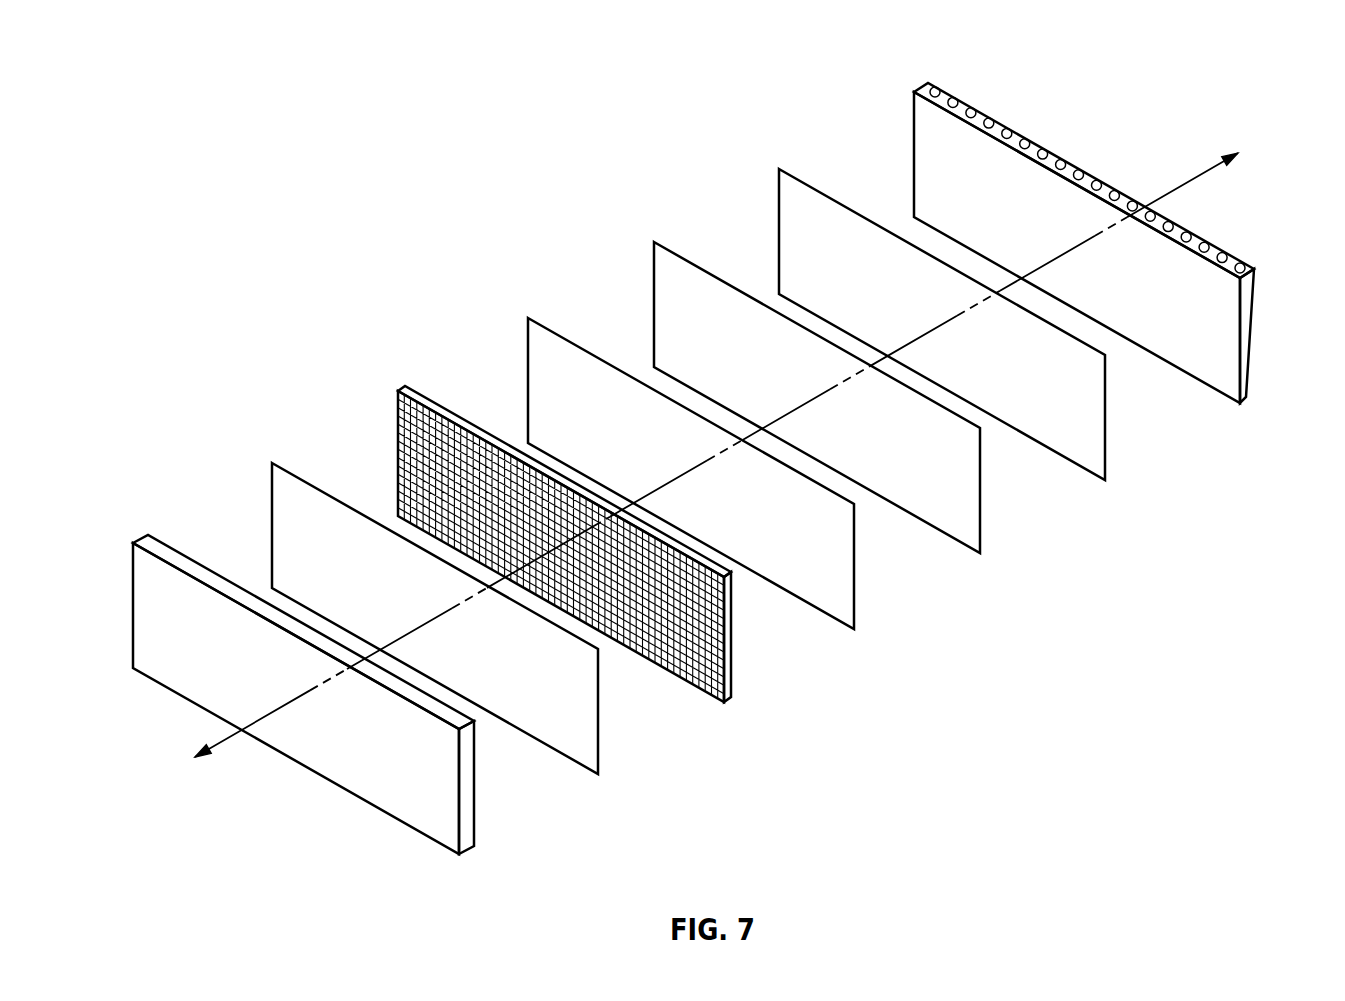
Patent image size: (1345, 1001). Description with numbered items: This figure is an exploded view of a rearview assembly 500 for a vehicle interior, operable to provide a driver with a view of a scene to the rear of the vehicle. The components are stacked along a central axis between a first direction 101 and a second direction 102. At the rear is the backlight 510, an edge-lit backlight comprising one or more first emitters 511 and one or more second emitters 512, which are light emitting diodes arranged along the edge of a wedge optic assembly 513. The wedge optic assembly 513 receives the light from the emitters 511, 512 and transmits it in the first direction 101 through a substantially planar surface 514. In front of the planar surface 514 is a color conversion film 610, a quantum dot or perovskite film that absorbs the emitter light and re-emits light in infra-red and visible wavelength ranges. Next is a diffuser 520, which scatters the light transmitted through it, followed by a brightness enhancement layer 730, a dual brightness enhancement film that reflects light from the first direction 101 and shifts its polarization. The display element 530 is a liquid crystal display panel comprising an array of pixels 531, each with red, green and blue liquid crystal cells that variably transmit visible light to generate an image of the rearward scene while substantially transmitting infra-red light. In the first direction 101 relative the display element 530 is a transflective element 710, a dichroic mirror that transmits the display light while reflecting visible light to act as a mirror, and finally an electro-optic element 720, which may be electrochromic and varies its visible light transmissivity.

The rearview assembly 500 is at (305, 212).
The backlight 510 is at (1091, 269).
The first emitters 511 is at (993, 137).
The second emitters 512 is at (1027, 145).
The wedge optic assembly 513 is at (1248, 348).
The planar surface 514 is at (940, 180).
The diffuser 520 is at (982, 498).
The display element 530 is at (559, 549).
The pixels 531 is at (412, 475).
The color conversion film 610 is at (1107, 427).
The transflective element 710 is at (600, 718).
The electro-optic element 720 is at (475, 788).
The brightness enhancement layer 730 is at (857, 568).
The first direction 101 is at (700, 469).
The second direction 102 is at (1250, 148).